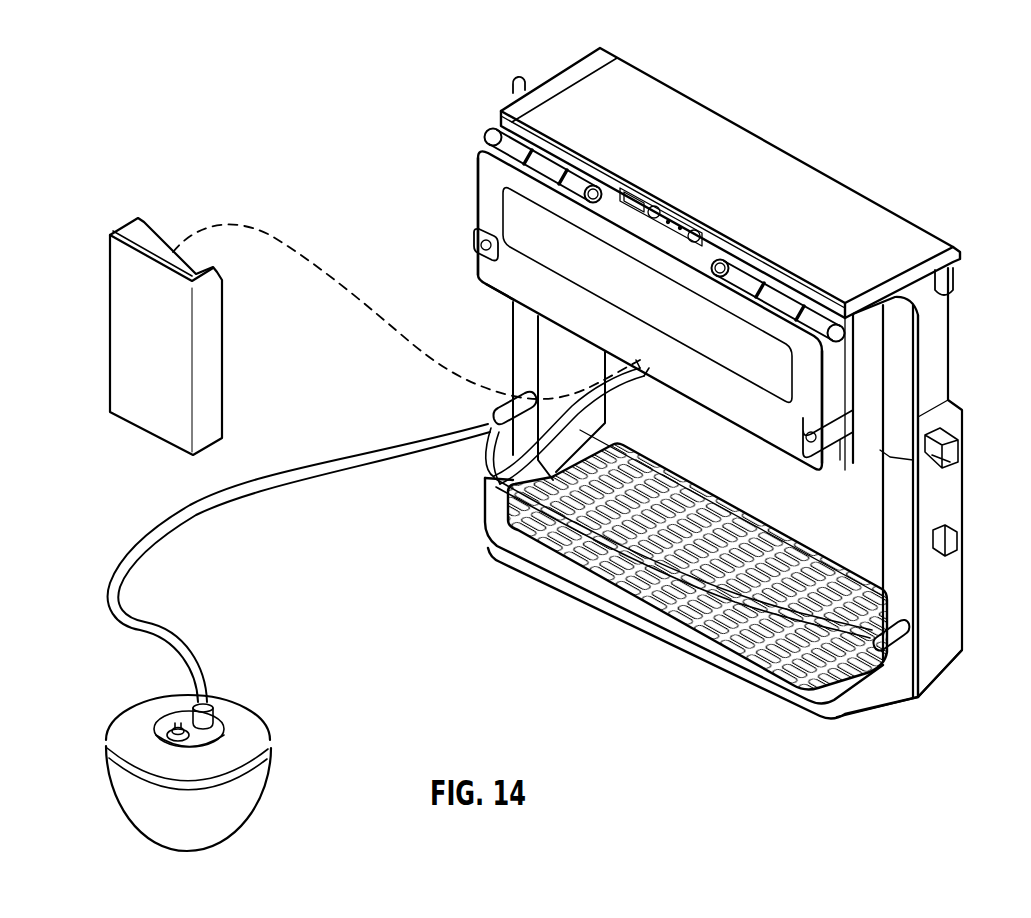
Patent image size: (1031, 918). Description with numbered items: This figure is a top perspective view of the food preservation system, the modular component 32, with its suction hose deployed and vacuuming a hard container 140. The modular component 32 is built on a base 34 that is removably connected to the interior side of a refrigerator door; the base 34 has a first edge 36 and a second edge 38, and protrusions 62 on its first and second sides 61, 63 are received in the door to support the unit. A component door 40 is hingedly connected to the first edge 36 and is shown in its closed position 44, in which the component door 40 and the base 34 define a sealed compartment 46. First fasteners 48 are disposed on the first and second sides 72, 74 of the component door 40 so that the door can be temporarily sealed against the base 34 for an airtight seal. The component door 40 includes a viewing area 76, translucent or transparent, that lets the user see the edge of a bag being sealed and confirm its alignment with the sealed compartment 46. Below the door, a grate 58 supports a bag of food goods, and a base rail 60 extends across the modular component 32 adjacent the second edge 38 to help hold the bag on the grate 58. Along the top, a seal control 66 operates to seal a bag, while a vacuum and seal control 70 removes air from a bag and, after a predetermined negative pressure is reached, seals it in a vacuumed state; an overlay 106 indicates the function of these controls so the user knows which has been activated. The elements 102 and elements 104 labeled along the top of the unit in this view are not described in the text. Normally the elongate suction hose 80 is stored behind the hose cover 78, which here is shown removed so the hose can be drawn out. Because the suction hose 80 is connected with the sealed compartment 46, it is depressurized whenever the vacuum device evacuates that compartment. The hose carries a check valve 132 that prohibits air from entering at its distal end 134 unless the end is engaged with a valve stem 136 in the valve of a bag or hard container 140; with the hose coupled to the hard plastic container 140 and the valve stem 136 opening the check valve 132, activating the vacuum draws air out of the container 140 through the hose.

The modular component 32 is at (793, 122).
The base 34 is at (930, 346).
The first edge 36 is at (625, 140).
The second edge 38 is at (927, 672).
The component door 40 is at (481, 283).
The closed position 44 is at (486, 320).
The sealed compartment 46 is at (864, 393).
The first fasteners 48 is at (482, 243).
The grate 58 is at (713, 648).
The base rail 60 is at (480, 444).
The first side 61 is at (517, 364).
The protrusions 62 is at (949, 442).
The second side 63 is at (904, 553).
The seal control 66 is at (680, 245).
The vacuum and seal control 70 is at (655, 216).
The first side 72 is at (798, 381).
The second side 74 is at (480, 191).
The viewing area 76 is at (648, 311).
The hose cover 78 is at (137, 362).
The suction hose 80 is at (310, 476).
The roller end cap 102 is at (582, 205).
The rollers 104 is at (514, 140).
The overlay 106 is at (664, 224).
The check valve 132 is at (218, 721).
The distal end 134 is at (208, 709).
The valve stem 136 is at (172, 730).
The hard container 140 is at (250, 793).